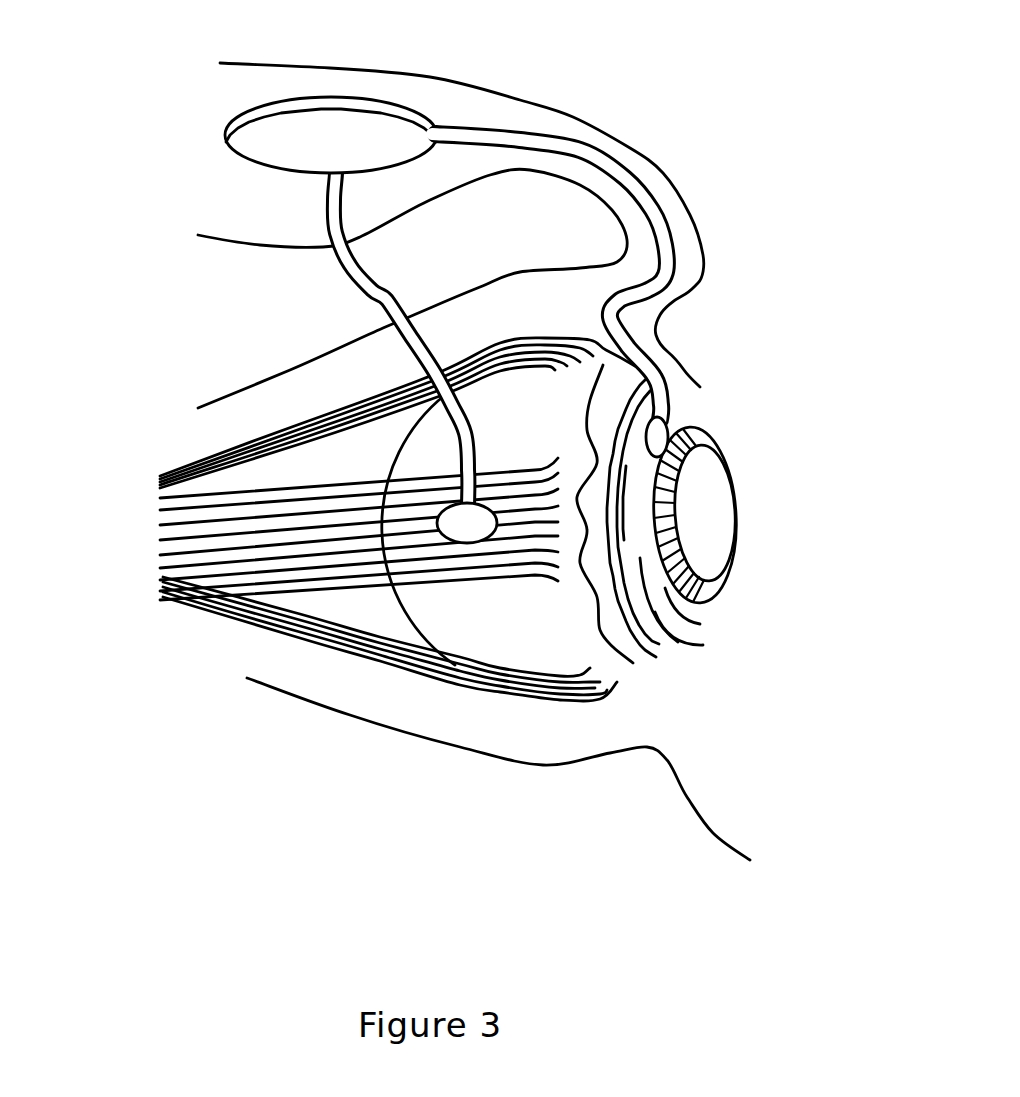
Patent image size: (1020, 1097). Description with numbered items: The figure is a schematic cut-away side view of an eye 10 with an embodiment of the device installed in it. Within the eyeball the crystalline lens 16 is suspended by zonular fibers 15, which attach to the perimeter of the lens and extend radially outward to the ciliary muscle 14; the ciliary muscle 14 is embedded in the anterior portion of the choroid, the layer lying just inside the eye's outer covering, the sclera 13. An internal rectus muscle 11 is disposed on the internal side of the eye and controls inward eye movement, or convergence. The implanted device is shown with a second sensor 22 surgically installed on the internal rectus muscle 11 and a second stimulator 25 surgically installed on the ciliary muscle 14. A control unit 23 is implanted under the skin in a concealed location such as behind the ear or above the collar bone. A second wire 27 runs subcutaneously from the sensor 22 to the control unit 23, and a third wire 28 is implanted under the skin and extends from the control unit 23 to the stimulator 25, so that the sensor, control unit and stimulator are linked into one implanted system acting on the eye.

The eye 10 is at (663, 193).
The internal rectus muscle 11 is at (312, 530).
The sclera 13 is at (623, 657).
The ciliary muscle 14 is at (677, 643).
The zonular fibers 15 is at (703, 600).
The crystalline lens 16 is at (710, 528).
The second sensor 22 is at (465, 527).
The control unit 23 is at (268, 135).
The second stimulator 25 is at (664, 432).
The second wire 27 is at (360, 287).
The third wire 28 is at (593, 163).